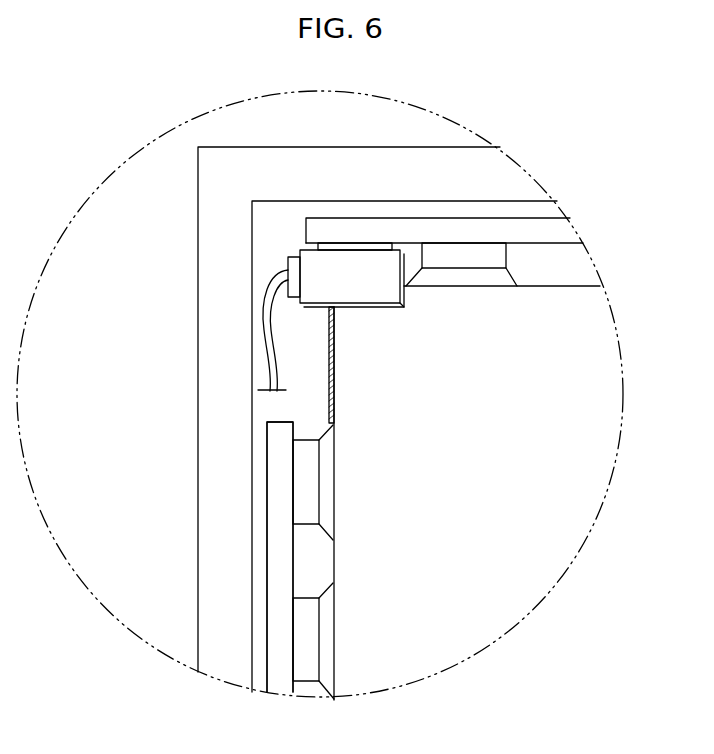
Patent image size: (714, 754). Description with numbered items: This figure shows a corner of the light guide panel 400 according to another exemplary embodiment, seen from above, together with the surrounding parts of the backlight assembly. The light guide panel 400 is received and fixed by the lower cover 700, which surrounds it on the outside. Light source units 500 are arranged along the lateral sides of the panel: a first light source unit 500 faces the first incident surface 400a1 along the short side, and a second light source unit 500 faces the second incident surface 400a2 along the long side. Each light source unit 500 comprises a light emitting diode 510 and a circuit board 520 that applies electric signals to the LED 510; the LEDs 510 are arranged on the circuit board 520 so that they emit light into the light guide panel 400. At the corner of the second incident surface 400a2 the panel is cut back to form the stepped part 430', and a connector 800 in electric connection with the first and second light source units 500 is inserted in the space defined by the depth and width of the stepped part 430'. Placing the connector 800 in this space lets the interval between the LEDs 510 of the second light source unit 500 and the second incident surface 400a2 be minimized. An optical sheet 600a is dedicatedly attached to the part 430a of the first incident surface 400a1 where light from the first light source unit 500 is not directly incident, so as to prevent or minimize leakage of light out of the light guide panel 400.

The light guide panel 400 is at (498, 502).
The first incident surface 400a1 is at (335, 637).
The second incident surface 400a2 is at (545, 287).
The part of the first incident surface 430a is at (347, 307).
The stepped part 430' is at (425, 356).
The light source unit 500 is at (540, 228).
The light emitting diode 510 is at (305, 462).
The circuit board 520 is at (273, 519).
The optical sheet 600a is at (330, 359).
The lower cover 700 is at (216, 213).
The connector 800 is at (312, 256).